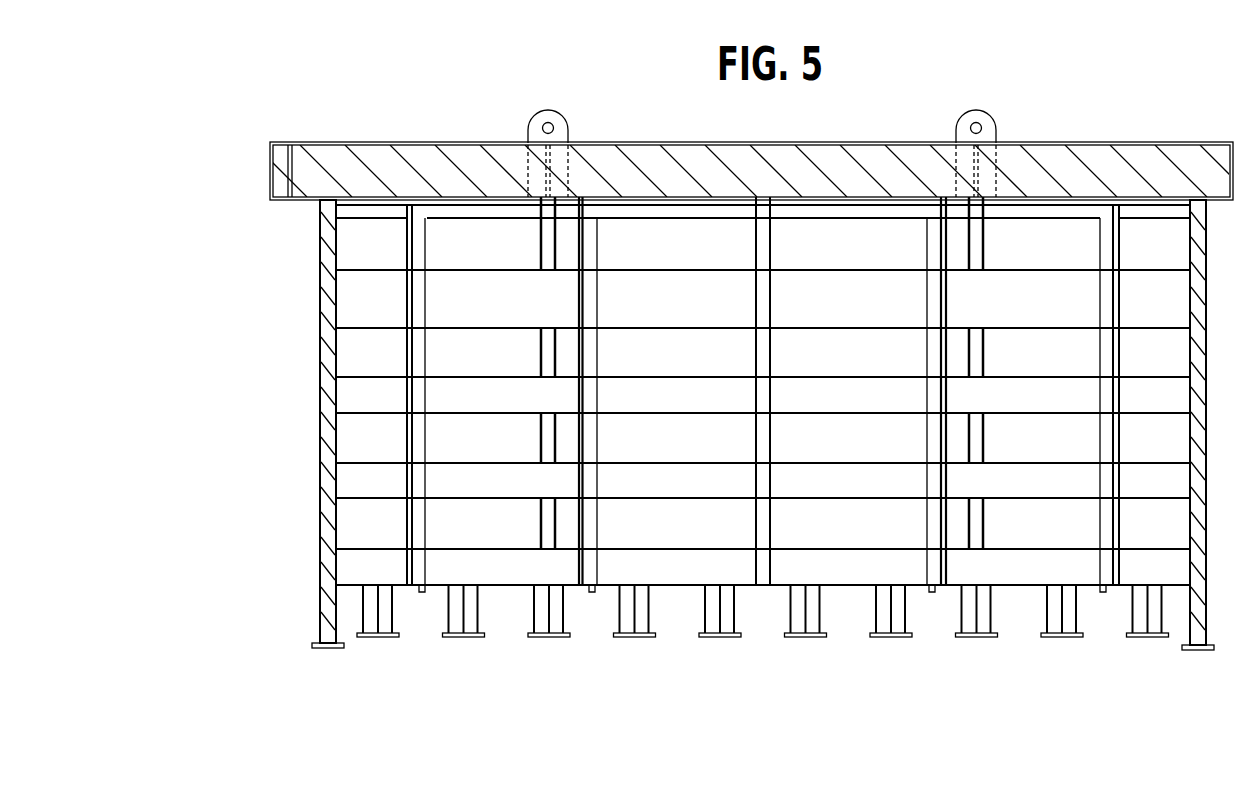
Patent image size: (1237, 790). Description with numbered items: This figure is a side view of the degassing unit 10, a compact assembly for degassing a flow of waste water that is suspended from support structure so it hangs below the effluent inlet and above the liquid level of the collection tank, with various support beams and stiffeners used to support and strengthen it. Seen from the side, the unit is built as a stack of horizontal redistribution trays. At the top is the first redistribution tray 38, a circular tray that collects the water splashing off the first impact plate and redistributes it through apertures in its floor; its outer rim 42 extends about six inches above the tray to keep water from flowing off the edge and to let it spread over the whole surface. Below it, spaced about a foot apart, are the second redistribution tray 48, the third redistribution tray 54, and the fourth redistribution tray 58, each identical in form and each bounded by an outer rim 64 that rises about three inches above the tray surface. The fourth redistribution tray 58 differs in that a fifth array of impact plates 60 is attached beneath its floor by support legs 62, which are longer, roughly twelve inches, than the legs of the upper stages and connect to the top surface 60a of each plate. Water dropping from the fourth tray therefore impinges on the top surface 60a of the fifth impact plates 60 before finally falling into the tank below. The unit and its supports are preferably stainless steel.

The degassing unit 10 is at (697, 413).
The first redistribution tray 38 is at (637, 329).
The rim 42 is at (508, 310).
The second redistribution tray 48 is at (645, 414).
The third redistribution tray 54 is at (645, 499).
The fourth redistribution tray 58 is at (670, 586).
The fifth impact plates 60 is at (553, 637).
The top surface of the fifth impact plates 60a is at (640, 633).
The support legs 62 is at (565, 612).
The outer rims 64 is at (508, 405).